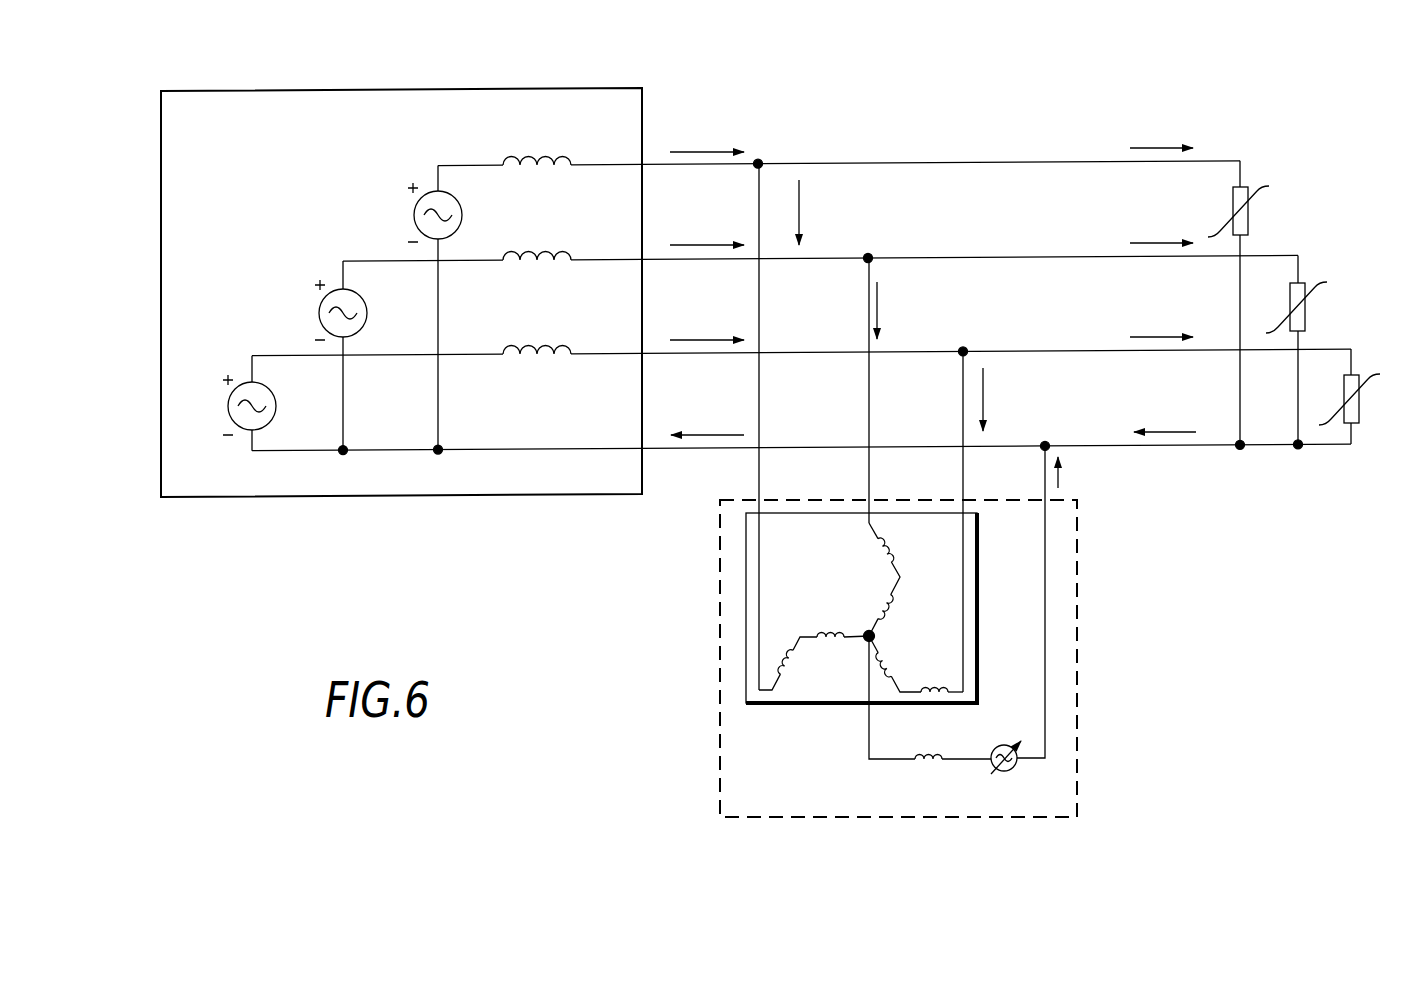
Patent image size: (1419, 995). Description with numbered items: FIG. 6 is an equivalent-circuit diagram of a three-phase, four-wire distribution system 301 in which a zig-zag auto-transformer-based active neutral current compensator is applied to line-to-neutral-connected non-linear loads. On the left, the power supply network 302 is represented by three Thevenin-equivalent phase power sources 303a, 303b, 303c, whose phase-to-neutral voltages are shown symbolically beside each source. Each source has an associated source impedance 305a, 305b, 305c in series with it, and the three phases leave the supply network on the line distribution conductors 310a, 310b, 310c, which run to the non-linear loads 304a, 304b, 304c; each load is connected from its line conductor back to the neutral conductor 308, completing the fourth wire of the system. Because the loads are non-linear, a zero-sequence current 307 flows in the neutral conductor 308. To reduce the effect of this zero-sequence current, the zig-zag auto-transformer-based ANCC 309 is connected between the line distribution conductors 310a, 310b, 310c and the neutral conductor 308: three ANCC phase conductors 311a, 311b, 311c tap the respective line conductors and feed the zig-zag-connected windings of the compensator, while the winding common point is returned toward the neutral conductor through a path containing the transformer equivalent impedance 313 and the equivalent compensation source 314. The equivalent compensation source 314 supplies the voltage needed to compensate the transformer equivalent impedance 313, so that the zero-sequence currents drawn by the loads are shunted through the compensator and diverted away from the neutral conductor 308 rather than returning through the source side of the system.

The three-phase, four-wire equivalent distribution system 301 is at (258, 68).
The power supply network 302 is at (578, 497).
The phase power source 303a is at (462, 213).
The phase power source 303b is at (367, 318).
The phase power source 303c is at (276, 410).
The non-linear load 304a is at (1250, 225).
The non-linear load 304b is at (1307, 320).
The non-linear load 304c is at (1359, 423).
The source impedance 305a is at (569, 158).
The source impedance 305b is at (569, 253).
The source impedance 305c is at (572, 347).
The zero-sequence current 307 is at (700, 434).
The neutral conductor 308 is at (1195, 447).
The zig-zag auto-transformer-based ANCC 309 is at (1077, 604).
The line distribution conductor 310a is at (1062, 162).
The line distribution conductor 310b is at (1062, 256).
The line distribution conductor 310c is at (1062, 349).
The ANCC phase conductor 311a is at (760, 290).
The ANCC phase conductor 311b is at (870, 388).
The ANCC phase conductor 311c is at (963, 388).
The transformer equivalent impedance 313 is at (918, 752).
The equivalent compensation source 314 is at (1010, 740).